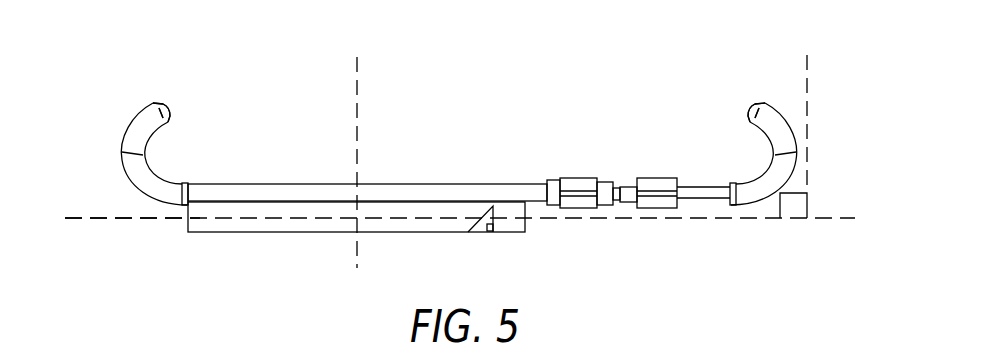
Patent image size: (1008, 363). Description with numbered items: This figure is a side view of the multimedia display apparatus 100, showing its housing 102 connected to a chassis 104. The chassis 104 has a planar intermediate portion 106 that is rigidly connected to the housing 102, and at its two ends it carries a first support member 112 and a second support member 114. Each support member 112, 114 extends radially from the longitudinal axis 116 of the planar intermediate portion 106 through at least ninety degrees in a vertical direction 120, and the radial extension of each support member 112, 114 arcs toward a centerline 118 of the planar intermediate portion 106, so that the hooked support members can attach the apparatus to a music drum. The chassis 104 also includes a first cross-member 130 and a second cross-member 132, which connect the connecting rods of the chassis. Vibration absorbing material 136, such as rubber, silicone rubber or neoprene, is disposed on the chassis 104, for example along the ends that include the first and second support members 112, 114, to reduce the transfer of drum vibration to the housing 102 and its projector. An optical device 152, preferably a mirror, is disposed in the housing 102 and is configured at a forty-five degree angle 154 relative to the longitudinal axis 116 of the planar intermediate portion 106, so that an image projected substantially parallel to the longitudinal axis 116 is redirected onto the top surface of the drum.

The multimedia display apparatus 100 is at (210, 56).
The housing 102 is at (525, 229).
The chassis 104 is at (598, 73).
The planar intermediate portion 106 is at (273, 181).
The first support member 112 is at (122, 143).
The second support member 114 is at (789, 133).
The longitudinal axis 116 is at (122, 214).
The centerline 118 is at (355, 60).
The vertical direction 120 is at (778, 206).
The first cross-member 130 is at (658, 178).
The second cross-member 132 is at (590, 178).
The vibration absorbing material 136 is at (147, 117).
The optical device 152 is at (487, 220).
The 45 degree angle 154 is at (493, 228).